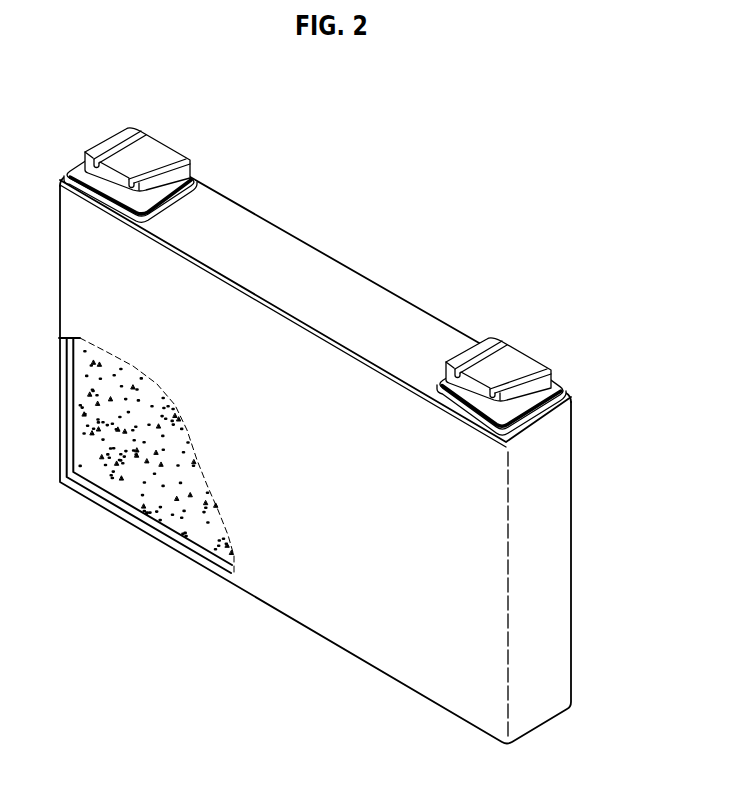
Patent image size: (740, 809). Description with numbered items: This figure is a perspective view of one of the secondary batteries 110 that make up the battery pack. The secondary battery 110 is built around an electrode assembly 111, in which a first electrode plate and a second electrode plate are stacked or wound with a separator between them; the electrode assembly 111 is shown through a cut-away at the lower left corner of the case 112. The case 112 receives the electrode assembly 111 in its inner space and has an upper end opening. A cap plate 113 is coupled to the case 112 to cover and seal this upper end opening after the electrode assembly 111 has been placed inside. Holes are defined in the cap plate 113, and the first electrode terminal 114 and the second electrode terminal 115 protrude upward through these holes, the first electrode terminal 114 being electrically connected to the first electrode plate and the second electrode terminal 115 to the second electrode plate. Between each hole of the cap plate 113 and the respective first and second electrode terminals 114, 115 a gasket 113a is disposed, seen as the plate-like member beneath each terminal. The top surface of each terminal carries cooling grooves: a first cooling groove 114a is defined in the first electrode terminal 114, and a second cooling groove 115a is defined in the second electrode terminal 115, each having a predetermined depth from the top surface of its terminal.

The secondary battery 110 is at (471, 170).
The electrode assembly 111 is at (153, 508).
The case 112 is at (347, 632).
The cap plate 113 is at (308, 252).
The gasket 113a is at (198, 180).
The first electrode terminal 114 is at (153, 149).
The first cooling groove 114a is at (132, 182).
The second electrode terminal 115 is at (522, 360).
The second cooling groove 115a is at (493, 391).